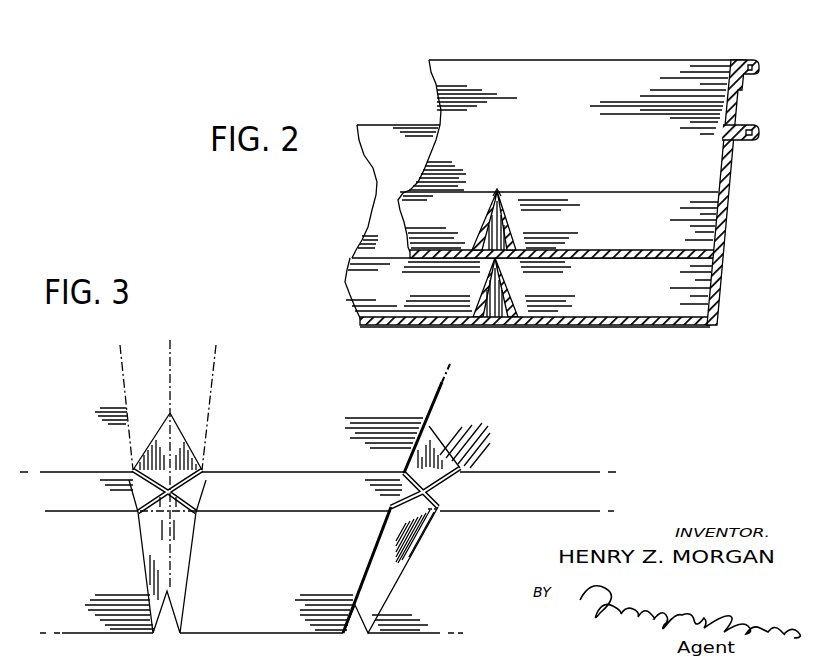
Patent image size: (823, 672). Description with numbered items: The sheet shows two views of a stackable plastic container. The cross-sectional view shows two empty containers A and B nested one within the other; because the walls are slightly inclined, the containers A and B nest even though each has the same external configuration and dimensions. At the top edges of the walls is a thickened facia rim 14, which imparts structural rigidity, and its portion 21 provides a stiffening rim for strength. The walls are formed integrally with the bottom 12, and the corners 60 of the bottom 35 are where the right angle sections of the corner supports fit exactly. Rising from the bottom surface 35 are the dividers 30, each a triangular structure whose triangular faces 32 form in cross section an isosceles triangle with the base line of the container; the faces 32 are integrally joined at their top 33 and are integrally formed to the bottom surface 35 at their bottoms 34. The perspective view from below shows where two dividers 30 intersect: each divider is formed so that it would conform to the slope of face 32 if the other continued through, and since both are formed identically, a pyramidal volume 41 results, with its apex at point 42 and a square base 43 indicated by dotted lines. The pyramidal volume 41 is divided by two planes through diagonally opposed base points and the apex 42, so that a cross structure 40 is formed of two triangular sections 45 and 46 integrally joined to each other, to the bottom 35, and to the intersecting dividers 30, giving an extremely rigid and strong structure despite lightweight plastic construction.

In FIG. 2, the bottom 12 is at (637, 333).
In FIG. 2, the facia rim 14 is at (744, 59).
In FIG. 2, the stiffening rim portion 21 is at (740, 78).
In FIG. 3, the divider 30 is at (170, 383).
In FIG. 2, the triangular face 32 is at (486, 224).
In FIG. 3, the triangular face 32 is at (126, 385).
In FIG. 2, the top of divider faces 33 is at (496, 190).
In FIG. 2, the bottom of divider face 34 is at (487, 262).
In FIG. 3, the bottom of divider face 34 is at (130, 469).
In FIG. 2, the bottom surface 35 is at (418, 263).
In FIG. 3, the bottom surface 35 is at (101, 607).
In FIG. 3, the cross structure 40 is at (157, 511).
In FIG. 3, the pyramidal volume 41 is at (130, 494).
In FIG. 3, the apex 42 is at (172, 411).
In FIG. 3, the base of pyramidal volume 43 is at (207, 492).
In FIG. 3, the triangular section 45 is at (148, 443).
In FIG. 3, the triangular section 46 is at (187, 434).
In FIG. 2, the corner 60 is at (714, 328).
In FIG. 2, the container A is at (735, 195).
In FIG. 2, the container B is at (740, 110).